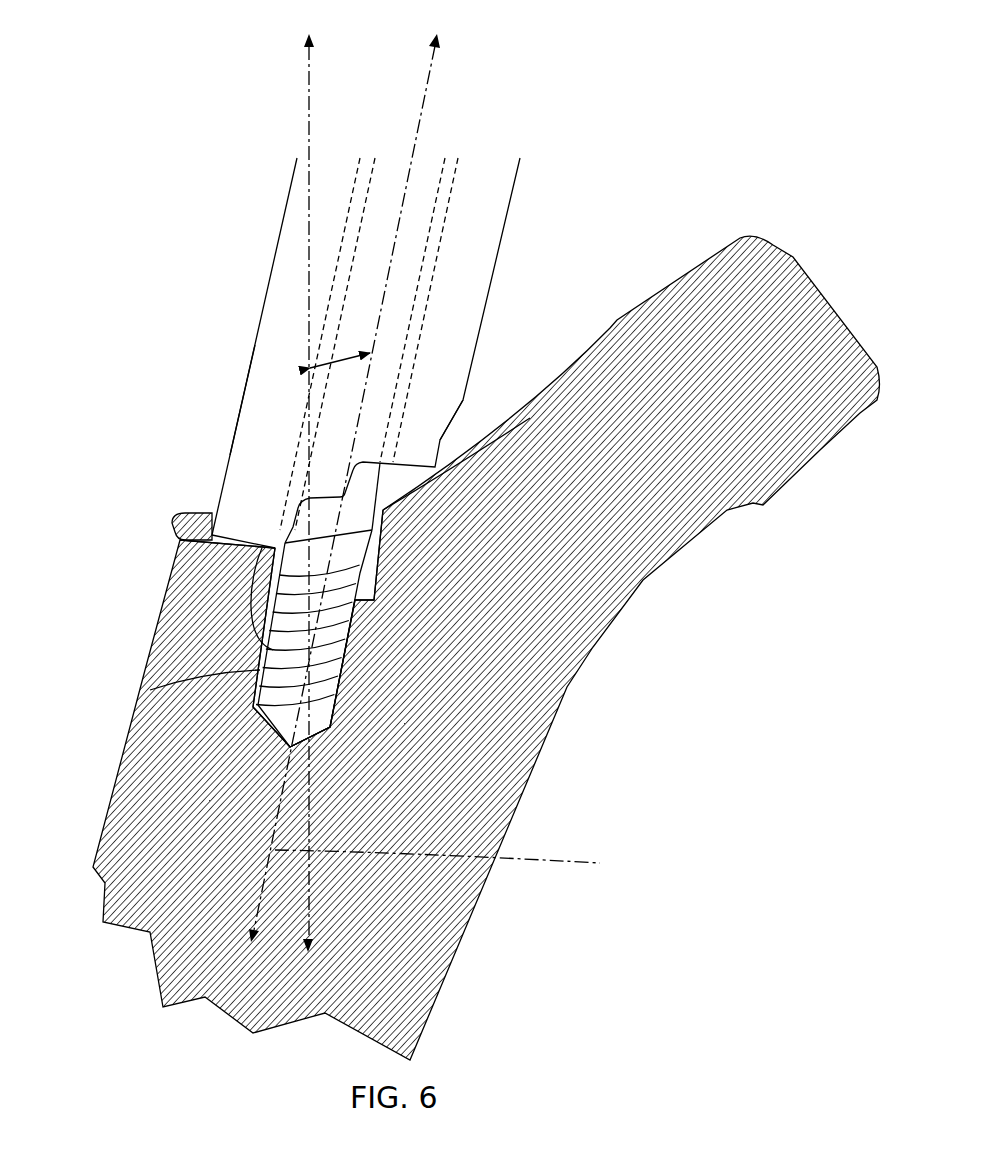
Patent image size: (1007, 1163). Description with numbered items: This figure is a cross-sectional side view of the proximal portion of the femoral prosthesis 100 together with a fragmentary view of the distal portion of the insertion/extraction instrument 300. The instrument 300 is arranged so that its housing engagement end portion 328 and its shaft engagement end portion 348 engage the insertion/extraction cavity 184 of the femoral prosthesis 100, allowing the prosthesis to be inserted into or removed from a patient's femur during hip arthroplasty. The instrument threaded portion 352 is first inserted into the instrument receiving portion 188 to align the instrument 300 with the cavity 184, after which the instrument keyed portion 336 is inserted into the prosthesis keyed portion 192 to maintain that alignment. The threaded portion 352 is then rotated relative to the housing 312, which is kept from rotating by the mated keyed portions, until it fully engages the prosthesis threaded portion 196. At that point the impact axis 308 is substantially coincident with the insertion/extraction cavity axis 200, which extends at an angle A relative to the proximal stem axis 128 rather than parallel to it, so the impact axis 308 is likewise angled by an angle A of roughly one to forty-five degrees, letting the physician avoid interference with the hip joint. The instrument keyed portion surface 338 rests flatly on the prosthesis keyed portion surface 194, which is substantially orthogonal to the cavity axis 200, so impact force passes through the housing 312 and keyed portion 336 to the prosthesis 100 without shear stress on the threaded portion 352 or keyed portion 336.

The femoral prosthesis 100 is at (433, 967).
The proximal stem axis 128 is at (309, 95).
The insertion/extraction cavity 184 is at (385, 510).
The instrument receiving portion 188 is at (365, 578).
The prosthesis keyed portion 192 is at (213, 512).
The prosthesis keyed portion surface 194 is at (250, 548).
The prosthesis threaded portion 196 is at (247, 678).
The insertion/extraction cavity axis 200 is at (462, 865).
The insertion/extraction instrument 300 is at (262, 397).
The impact axis 308 is at (433, 68).
The housing 312 is at (258, 442).
The housing engagement end portion 328 is at (457, 350).
The instrument keyed portion 336 is at (180, 540).
The instrument keyed portion surface 338 is at (193, 650).
The shaft engagement end portion 348 is at (412, 250).
The instrument threaded portion 352 is at (325, 690).
The angle A is at (347, 353).